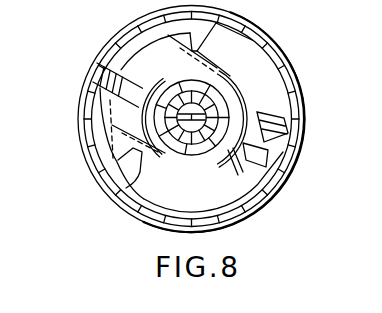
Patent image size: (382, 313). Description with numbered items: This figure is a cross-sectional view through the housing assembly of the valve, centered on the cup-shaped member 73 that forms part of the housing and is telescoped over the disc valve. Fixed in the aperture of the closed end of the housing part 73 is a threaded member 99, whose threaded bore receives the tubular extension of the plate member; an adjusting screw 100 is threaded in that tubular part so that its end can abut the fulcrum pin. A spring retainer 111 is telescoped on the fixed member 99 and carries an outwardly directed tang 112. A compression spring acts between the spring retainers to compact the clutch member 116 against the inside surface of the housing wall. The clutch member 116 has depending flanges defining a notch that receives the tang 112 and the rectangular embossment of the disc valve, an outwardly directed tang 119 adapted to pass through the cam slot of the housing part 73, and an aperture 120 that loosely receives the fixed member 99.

The cup-shaped member 73 is at (302, 100).
The fixed threaded member 99 is at (179, 71).
The adjusting screw 100 is at (188, 126).
The spring retainer 111 is at (244, 45).
The outwardly directed tang 112 is at (93, 83).
The clutch member 116 is at (240, 84).
The outwardly directed tang 119 is at (98, 64).
The aperture 120 is at (243, 110).